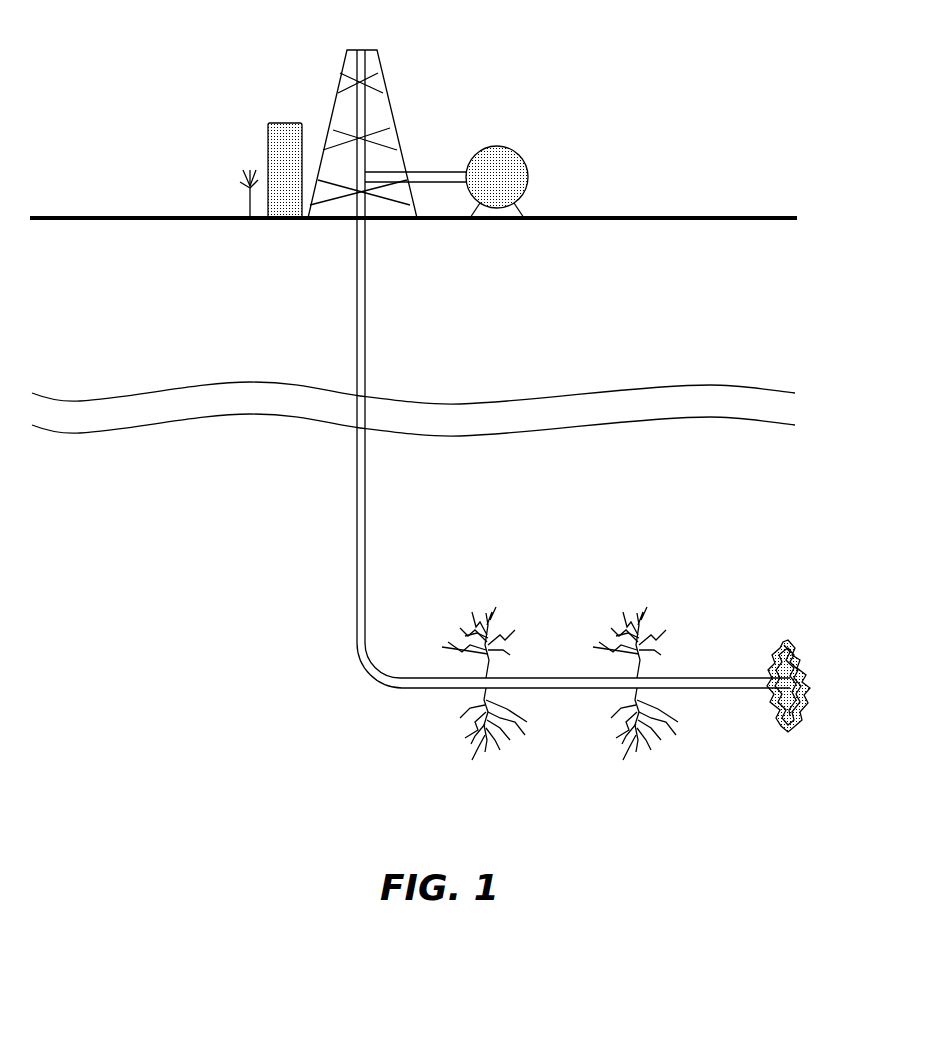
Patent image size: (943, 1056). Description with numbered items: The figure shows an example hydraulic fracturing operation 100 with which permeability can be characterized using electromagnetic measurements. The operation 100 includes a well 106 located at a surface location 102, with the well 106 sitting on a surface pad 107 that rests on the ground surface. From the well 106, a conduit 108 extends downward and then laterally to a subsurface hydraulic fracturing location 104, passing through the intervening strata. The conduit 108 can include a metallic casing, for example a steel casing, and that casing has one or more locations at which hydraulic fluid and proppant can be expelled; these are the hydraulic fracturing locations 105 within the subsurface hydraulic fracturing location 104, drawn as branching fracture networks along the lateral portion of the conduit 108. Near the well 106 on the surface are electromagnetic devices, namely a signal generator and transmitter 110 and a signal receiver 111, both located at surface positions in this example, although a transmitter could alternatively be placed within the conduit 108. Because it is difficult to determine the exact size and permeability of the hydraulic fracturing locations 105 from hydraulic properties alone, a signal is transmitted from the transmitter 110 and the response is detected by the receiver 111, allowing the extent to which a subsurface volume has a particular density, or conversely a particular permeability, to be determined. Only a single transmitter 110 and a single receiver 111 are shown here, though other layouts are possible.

The hydraulic fracturing operation 100 is at (138, 775).
The surface location 102 is at (60, 217).
The subsurface hydraulic fracturing location 104 is at (694, 573).
The hydraulic fracturing locations 105 is at (483, 615).
The well 106 is at (392, 120).
The surface pad 107 is at (538, 218).
The conduit 108 is at (707, 688).
The signal generator and transmitter 110 is at (250, 214).
The signal receiver 111 is at (287, 123).